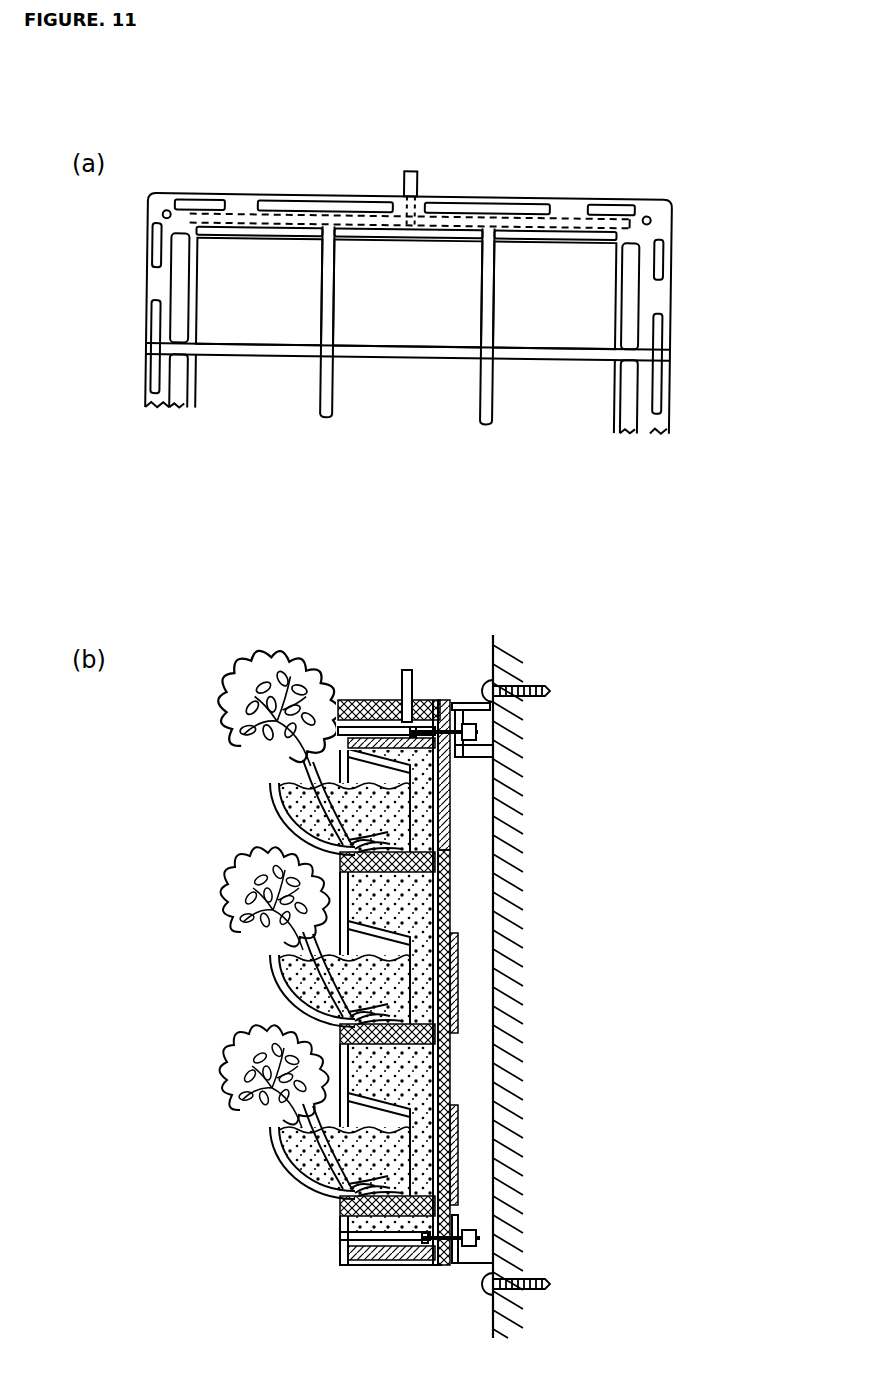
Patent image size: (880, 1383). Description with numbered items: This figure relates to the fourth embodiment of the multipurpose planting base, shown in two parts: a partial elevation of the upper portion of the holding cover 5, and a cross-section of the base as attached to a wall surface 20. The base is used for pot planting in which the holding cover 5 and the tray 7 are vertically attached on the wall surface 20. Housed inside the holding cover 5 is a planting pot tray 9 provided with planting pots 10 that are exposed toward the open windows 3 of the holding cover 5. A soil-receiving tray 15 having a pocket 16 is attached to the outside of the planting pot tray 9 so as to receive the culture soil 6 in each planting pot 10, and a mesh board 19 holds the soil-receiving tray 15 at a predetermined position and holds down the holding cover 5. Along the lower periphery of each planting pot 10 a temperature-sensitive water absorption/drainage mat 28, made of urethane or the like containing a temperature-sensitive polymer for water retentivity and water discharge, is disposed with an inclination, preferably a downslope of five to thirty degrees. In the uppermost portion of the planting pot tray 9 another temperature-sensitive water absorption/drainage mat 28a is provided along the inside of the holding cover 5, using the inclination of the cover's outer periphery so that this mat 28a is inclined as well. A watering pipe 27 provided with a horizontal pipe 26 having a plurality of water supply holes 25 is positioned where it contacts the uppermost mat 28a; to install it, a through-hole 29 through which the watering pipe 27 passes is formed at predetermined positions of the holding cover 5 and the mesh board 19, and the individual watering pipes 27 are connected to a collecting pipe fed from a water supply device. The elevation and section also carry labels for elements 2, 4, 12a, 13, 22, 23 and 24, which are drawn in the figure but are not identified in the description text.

The frame bar 2 is at (333, 306).
The open windows 3 is at (258, 332).
The plant 4 is at (236, 709).
The holding cover 5 is at (680, 311).
The culture soil 6 is at (445, 918).
The tray 7 is at (445, 860).
The planting pot tray 9 is at (460, 807).
The planting pot 10 is at (440, 857).
The hole 12a is at (657, 216).
The bolt 13 is at (490, 735).
The soil-receiving tray 15 is at (300, 842).
The pocket 16 is at (283, 805).
The mesh board 19 is at (335, 1208).
The wall surface 20 is at (502, 1113).
The flange 22 is at (492, 752).
The screw 23 is at (525, 690).
The bracket 24 is at (460, 703).
The water supply holes 25 is at (272, 216).
The horizontal pipe 26 is at (246, 214).
The watering pipe 27 is at (418, 183).
The temperature-sensitive water absorption/drainage mat 28 is at (445, 894).
The temperature-sensitive water absorption/drainage mat in the uppermost portion 28a is at (375, 700).
The through-hole 29 is at (410, 702).